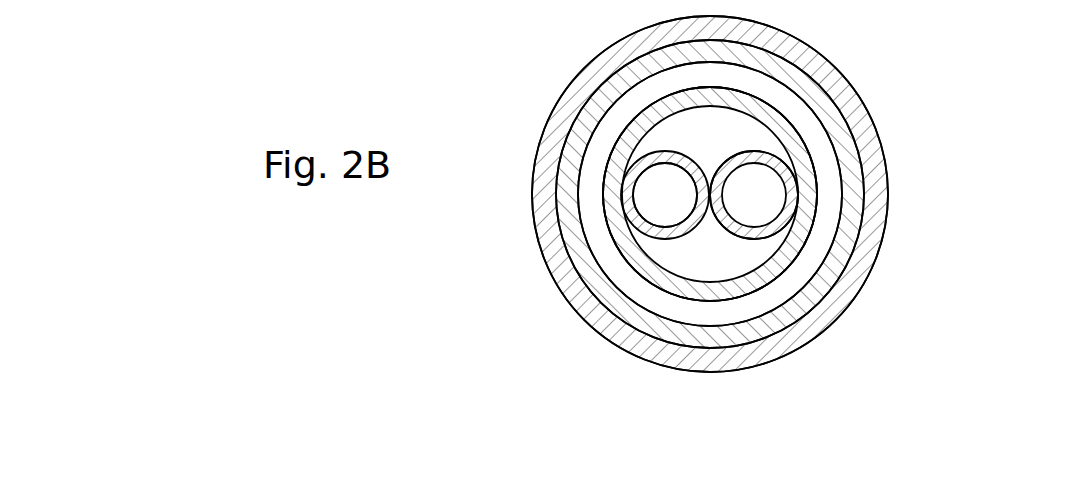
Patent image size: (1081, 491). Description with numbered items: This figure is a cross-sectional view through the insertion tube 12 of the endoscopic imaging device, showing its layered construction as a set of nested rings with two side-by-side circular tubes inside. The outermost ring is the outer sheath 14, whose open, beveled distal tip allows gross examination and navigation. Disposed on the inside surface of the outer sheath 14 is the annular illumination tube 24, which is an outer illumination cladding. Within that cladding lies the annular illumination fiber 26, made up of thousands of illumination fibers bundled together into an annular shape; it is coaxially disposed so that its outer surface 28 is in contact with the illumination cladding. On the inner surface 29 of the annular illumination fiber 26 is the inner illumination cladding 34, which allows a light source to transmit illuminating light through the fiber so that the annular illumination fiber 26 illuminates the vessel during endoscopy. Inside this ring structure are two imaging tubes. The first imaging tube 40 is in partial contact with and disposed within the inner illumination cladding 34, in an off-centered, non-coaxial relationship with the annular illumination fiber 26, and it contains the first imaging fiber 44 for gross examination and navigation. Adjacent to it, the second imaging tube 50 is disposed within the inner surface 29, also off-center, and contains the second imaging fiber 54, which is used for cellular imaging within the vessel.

The insertion tube 12 is at (905, 123).
The outer sheath 14 is at (853, 283).
The annular illumination tube 24 is at (853, 207).
The outer surface 28 is at (578, 224).
The annular illumination fiber 26 is at (627, 282).
The inner illumination cladding 34 is at (648, 134).
The inner surface 29 is at (712, 300).
The second imaging fiber 54 is at (651, 205).
The second imaging tube 50 is at (633, 193).
The first imaging fiber 44 is at (740, 205).
The first imaging tube 40 is at (785, 153).